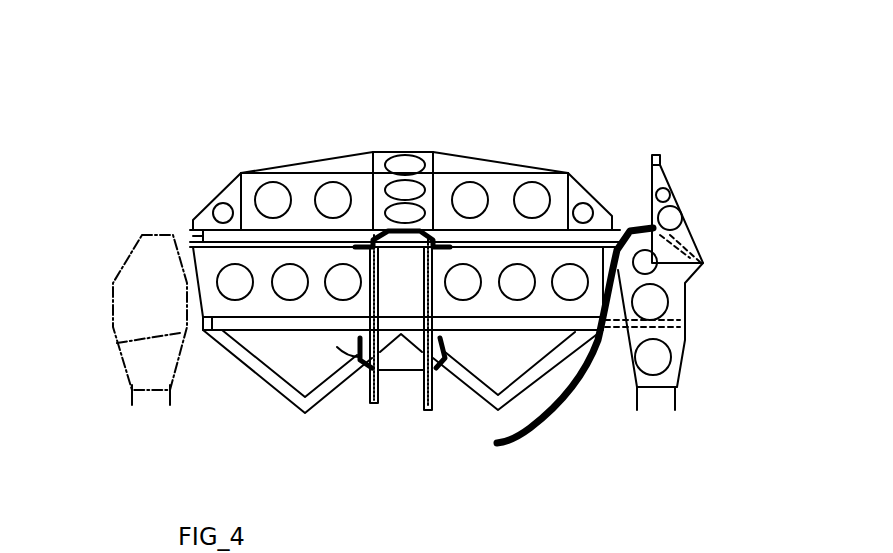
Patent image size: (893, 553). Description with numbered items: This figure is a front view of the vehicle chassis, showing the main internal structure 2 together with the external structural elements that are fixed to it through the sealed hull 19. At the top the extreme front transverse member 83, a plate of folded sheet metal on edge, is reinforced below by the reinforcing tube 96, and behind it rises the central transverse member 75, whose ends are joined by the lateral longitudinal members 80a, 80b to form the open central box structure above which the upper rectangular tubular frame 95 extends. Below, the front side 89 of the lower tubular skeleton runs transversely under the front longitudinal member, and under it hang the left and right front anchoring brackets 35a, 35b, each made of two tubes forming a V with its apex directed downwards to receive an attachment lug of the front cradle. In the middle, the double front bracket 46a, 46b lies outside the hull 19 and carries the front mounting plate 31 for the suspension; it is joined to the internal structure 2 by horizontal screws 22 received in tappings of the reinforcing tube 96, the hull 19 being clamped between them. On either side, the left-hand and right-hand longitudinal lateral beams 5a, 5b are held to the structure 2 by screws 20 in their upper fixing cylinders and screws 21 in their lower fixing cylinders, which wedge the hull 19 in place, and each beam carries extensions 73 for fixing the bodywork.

The main internal structure 2 is at (388, 84).
The left-hand longitudinal lateral beam 5a is at (685, 385).
The right-hand longitudinal lateral beam 5b is at (118, 272).
The sealed hull 19 is at (328, 380).
The screw 20 is at (668, 205).
The screw 21 is at (685, 347).
The horizontal screw 22 is at (408, 160).
The front mounting plate 31 is at (405, 383).
The left front anchoring bracket 35a is at (484, 390).
The right front anchoring bracket 35b is at (286, 398).
The front bracket 46a is at (425, 405).
The front bracket 46b is at (382, 405).
The extension 73 is at (662, 155).
The central transverse member 75 is at (576, 230).
The lateral longitudinal member 80a is at (603, 306).
The lateral longitudinal member 80b is at (192, 278).
The extreme front transverse member 83 is at (470, 160).
The front side 89 is at (258, 325).
The upper rectangular tubular frame 95 is at (193, 225).
The reinforcing tube 96 is at (492, 235).